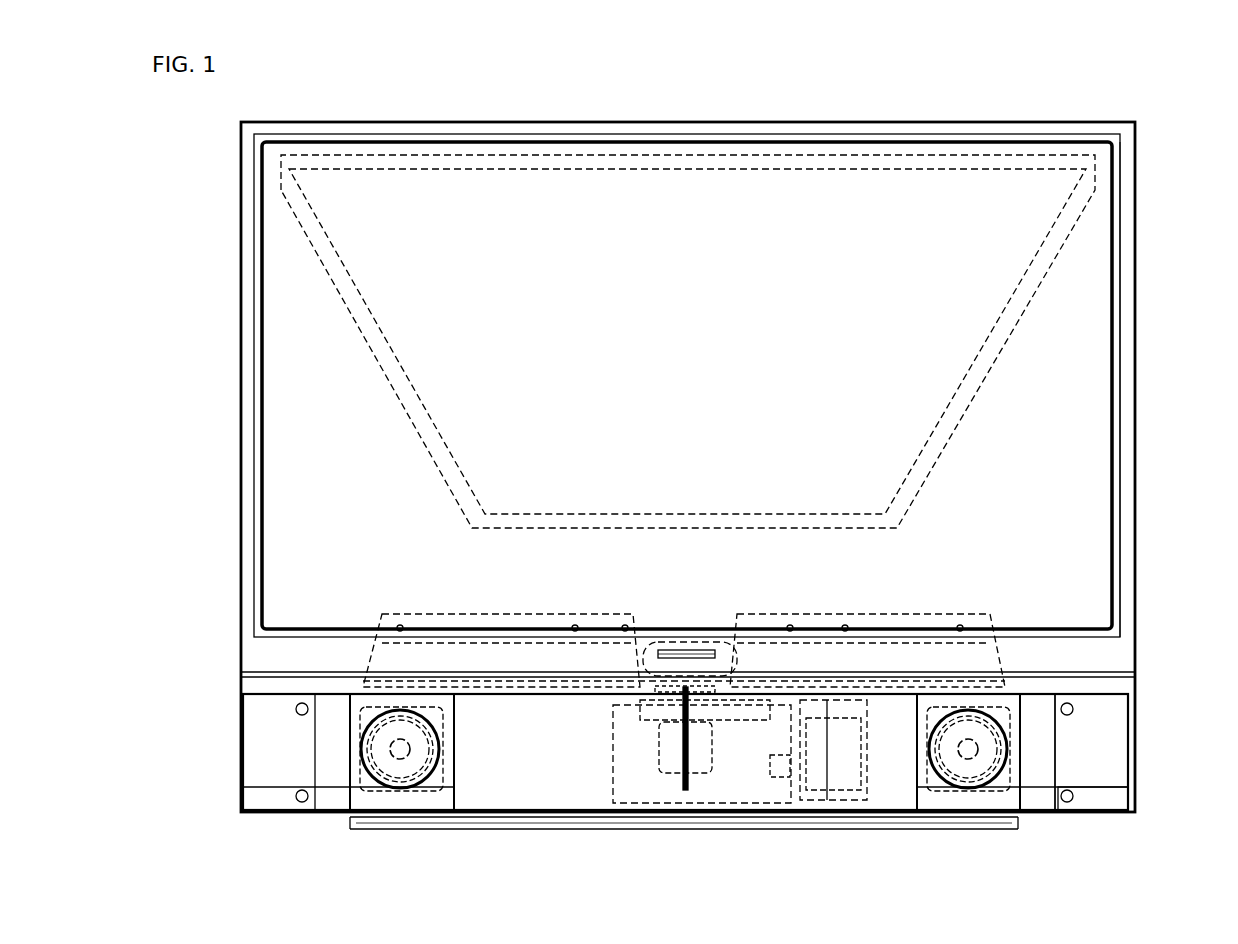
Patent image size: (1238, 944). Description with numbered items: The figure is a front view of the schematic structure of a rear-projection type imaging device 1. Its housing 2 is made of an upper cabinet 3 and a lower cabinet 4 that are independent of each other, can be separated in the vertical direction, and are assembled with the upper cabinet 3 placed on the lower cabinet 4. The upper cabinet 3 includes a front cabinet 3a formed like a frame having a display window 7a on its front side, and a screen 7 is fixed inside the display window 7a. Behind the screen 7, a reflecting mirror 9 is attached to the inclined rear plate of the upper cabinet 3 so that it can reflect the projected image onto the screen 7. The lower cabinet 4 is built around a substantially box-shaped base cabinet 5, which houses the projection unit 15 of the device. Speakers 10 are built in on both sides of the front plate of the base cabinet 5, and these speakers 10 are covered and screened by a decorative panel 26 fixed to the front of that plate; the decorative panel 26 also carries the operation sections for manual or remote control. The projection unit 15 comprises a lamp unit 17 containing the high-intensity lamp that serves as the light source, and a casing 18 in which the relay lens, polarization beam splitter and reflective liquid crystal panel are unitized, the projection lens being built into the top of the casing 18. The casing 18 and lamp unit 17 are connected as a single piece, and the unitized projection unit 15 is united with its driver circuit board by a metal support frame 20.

The rear-projection type imaging device 1 is at (1142, 160).
The housing 2 is at (1153, 622).
The upper cabinet 3 is at (1137, 433).
The front cabinet 3a is at (1127, 372).
The lower cabinet 4 is at (237, 730).
The base cabinet 5 is at (1135, 733).
The screen 7 is at (957, 195).
The display window 7a is at (1112, 338).
The reflecting mirror 9 is at (615, 195).
The speakers 10 is at (378, 788).
The projection unit 15 is at (675, 666).
The lamp unit 17 is at (836, 780).
The casing 18 is at (690, 652).
The metal support frame 20 is at (814, 778).
The decorative panel 26 is at (1098, 773).